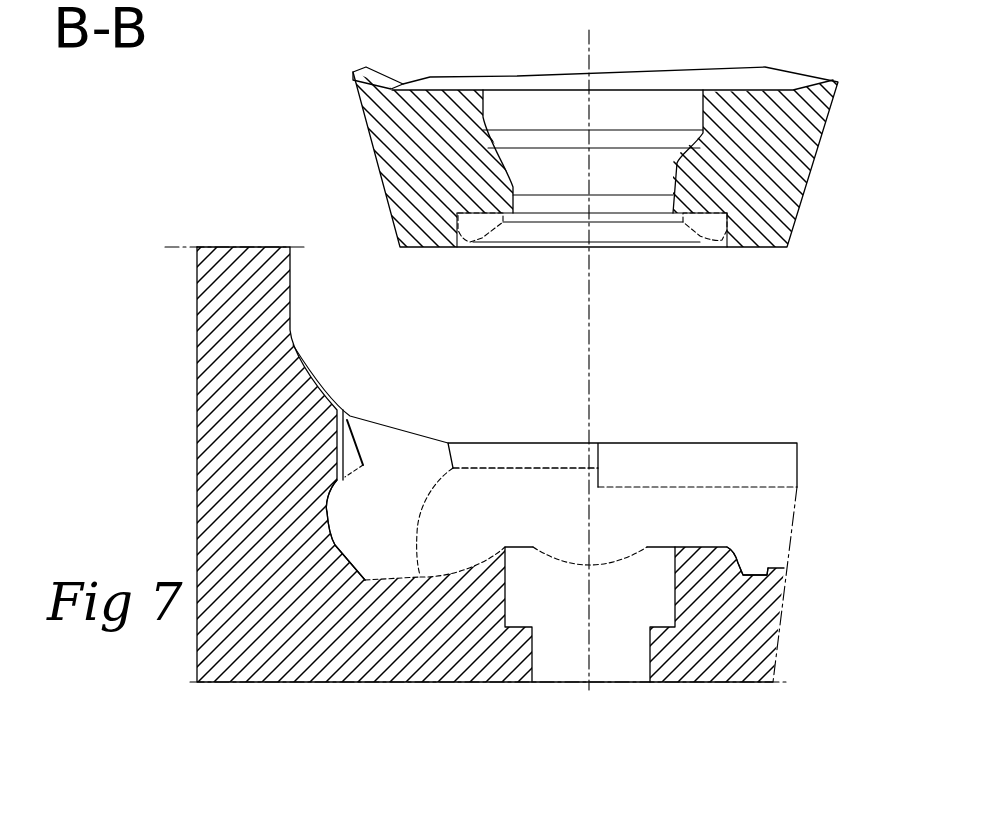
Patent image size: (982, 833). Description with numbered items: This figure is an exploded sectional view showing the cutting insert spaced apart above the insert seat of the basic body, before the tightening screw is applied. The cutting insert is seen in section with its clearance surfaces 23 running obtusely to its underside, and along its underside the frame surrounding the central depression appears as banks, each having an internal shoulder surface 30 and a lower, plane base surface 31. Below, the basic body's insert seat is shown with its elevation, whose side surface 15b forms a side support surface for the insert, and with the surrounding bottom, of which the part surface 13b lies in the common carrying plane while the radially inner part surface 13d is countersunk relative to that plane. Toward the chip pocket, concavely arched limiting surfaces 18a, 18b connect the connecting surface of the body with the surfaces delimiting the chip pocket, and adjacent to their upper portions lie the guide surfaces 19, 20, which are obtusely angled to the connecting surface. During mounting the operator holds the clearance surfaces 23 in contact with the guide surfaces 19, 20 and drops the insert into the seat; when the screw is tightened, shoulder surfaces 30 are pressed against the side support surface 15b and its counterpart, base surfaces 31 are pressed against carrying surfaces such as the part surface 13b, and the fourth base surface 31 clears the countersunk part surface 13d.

The clearance surface 23 is at (371, 168).
The shoulder surface 30 is at (453, 226).
The base surface 31 is at (770, 247).
The guide surface 19 is at (355, 443).
The guide surface 20 is at (542, 453).
The part surface 13d is at (437, 574).
The limiting surface 18b is at (509, 522).
The side surface 15b is at (738, 563).
The part surface 13b is at (768, 573).
The limiting surface 18a is at (331, 544).